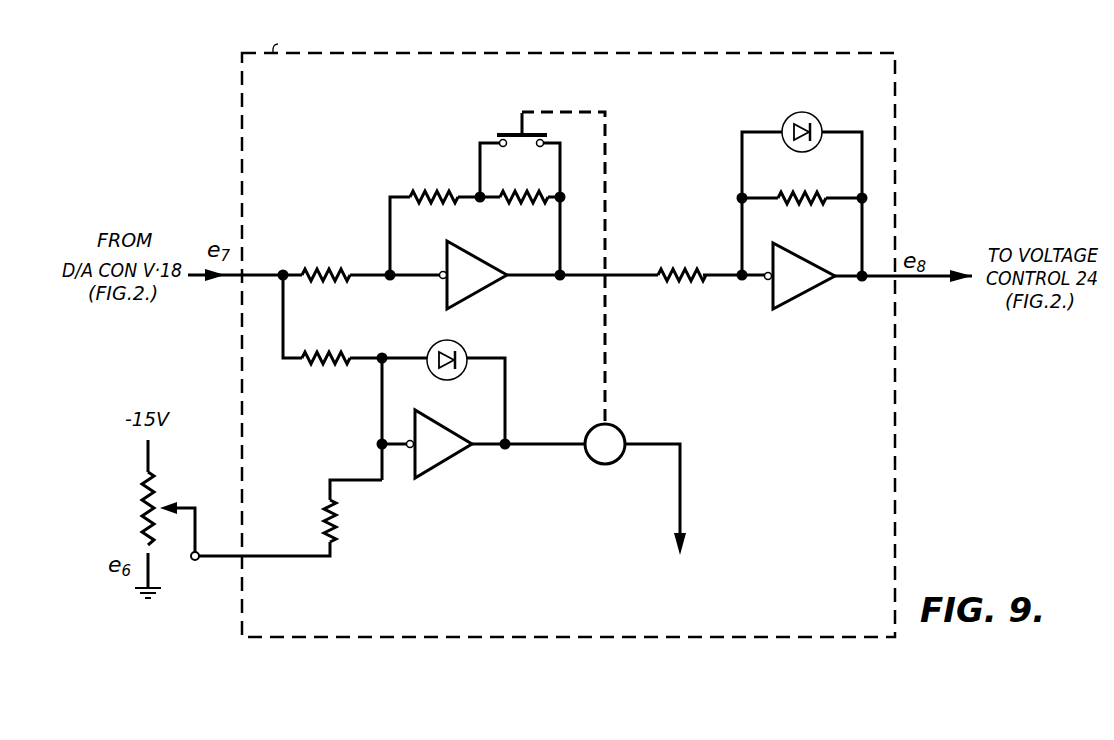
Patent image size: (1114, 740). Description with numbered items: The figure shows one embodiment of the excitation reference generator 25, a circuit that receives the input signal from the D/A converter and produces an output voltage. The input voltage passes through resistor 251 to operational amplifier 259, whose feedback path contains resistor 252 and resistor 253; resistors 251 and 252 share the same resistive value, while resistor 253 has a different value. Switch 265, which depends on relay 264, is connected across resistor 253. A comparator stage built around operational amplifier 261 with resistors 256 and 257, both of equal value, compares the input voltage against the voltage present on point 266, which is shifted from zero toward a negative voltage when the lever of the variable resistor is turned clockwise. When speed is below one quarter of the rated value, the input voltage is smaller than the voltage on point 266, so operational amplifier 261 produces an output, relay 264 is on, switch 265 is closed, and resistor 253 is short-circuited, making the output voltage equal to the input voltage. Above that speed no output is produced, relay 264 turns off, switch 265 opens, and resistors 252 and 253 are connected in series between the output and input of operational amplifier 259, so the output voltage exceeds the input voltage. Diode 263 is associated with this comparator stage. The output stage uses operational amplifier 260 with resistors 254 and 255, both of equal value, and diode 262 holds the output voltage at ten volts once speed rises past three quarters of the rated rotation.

The excitation reference generator 25 is at (820, 58).
The resistor 251 is at (319, 266).
The resistor 252 is at (425, 194).
The resistor 253 is at (540, 196).
The resistor 254 is at (677, 283).
The resistor 255 is at (790, 182).
The resistor 256 is at (308, 366).
The resistor 257 is at (352, 518).
The operational amplifier 259 is at (490, 266).
The operational amplifier 260 is at (816, 298).
The operational amplifier 261 is at (440, 430).
The diode 262 is at (796, 112).
The diode 263 is at (462, 350).
The relay 264 is at (617, 465).
The switch 265 is at (514, 128).
The point 266 is at (222, 592).